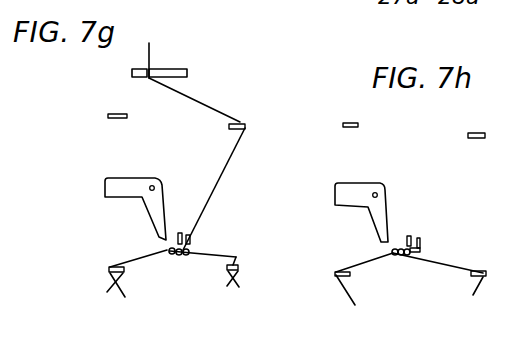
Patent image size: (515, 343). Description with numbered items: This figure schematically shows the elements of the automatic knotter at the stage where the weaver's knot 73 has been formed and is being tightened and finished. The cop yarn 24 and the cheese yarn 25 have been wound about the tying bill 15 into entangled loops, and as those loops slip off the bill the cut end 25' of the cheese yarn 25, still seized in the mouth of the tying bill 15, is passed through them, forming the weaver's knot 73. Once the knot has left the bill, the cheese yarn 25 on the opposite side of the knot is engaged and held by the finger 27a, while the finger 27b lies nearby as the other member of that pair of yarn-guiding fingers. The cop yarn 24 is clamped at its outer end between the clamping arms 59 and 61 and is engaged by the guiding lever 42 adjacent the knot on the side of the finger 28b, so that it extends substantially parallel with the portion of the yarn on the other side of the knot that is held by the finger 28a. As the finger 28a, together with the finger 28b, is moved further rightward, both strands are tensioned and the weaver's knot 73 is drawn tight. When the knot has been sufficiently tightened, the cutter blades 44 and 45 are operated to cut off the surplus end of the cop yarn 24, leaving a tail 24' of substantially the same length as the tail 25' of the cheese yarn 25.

In FIG. 7g, the tying bill 15 is at (123, 180).
In FIG. 7g, the cop yarn 24 is at (221, 196).
In FIG. 7h, the cop yarn 24 is at (454, 259).
In FIG. 7h, the tail of the cop yarn 24' is at (402, 221).
In FIG. 7h, the cheese yarn 25 is at (365, 295).
In FIG. 7g, the cut end of the cheese yarn 25' is at (130, 234).
In FIG. 7h, the cut end of the cheese yarn 25' is at (361, 237).
In FIG. 7g, the yarn-guiding finger 27a is at (118, 284).
In FIG. 7h, the yarn-guiding finger 27a is at (334, 274).
In FIG. 7g, the yarn-guiding finger 27b is at (112, 115).
In FIG. 7h, the yarn-guiding finger 27b is at (345, 124).
In FIG. 7g, the yarn-guiding finger 28a is at (236, 287).
In FIG. 7h, the yarn-guiding finger 28a is at (470, 275).
In FIG. 7g, the yarn-guiding finger 28b is at (240, 124).
In FIG. 7h, the yarn-guiding finger 28b is at (474, 133).
In FIG. 7g, the guiding lever 42 is at (181, 232).
In FIG. 7h, the guiding lever 42 is at (412, 237).
In FIG. 7g, the cutter blade 44 is at (191, 241).
In FIG. 7h, the cutter blade 44 is at (422, 243).
In FIG. 7g, the cutter blade 45 is at (188, 256).
In FIG. 7h, the cutter blade 45 is at (421, 250).
In FIG. 7g, the clamping arm 59 is at (172, 69).
In FIG. 7g, the clamping arm 61 is at (131, 72).
In FIG. 7g, the weaver's knot 73 is at (170, 256).
In FIG. 7h, the weaver's knot 73 is at (394, 256).